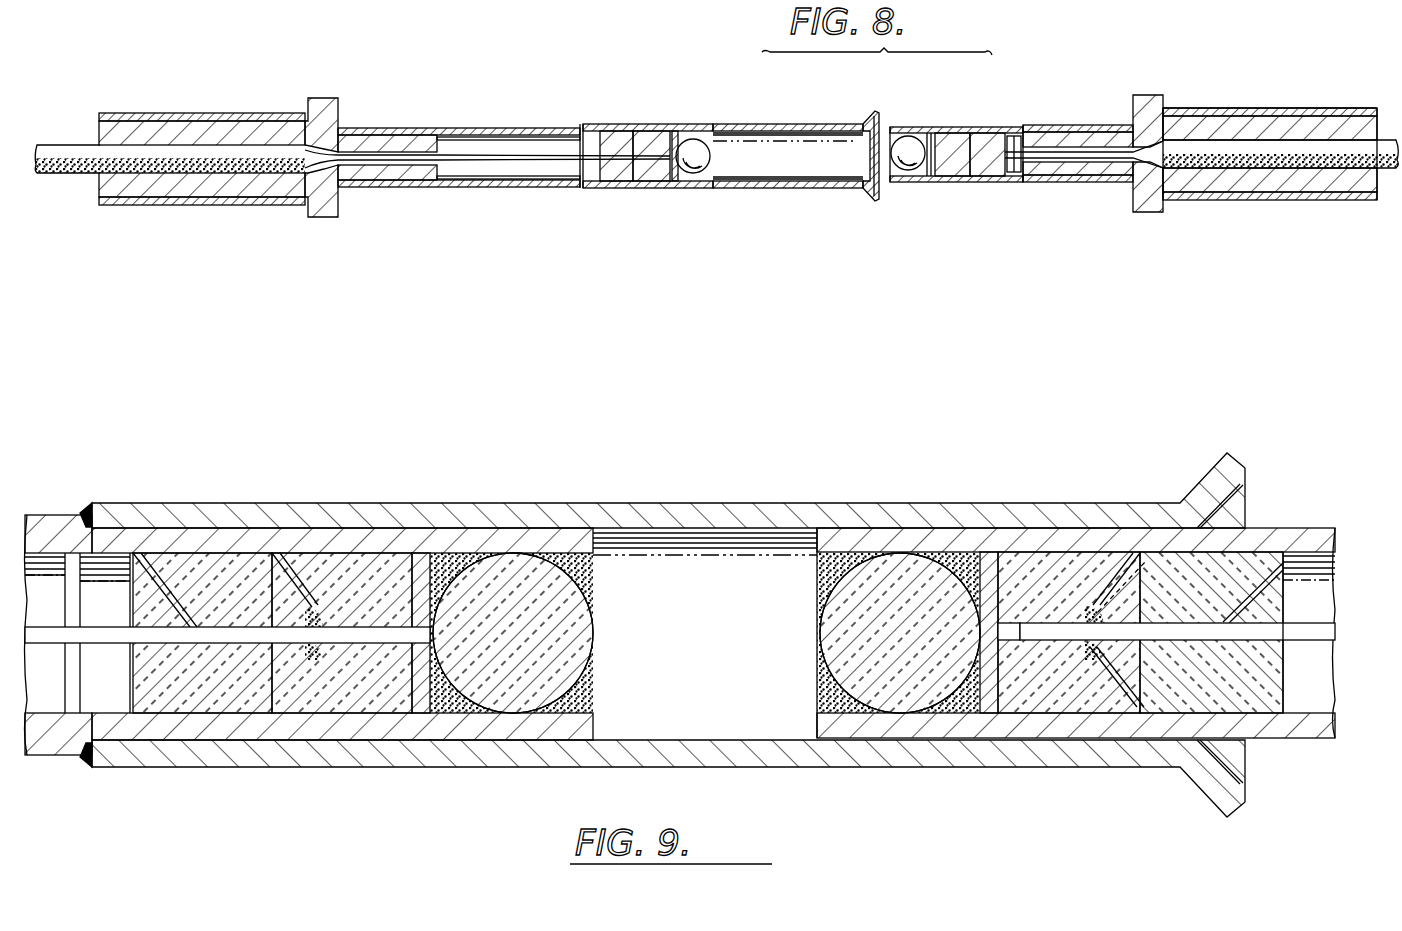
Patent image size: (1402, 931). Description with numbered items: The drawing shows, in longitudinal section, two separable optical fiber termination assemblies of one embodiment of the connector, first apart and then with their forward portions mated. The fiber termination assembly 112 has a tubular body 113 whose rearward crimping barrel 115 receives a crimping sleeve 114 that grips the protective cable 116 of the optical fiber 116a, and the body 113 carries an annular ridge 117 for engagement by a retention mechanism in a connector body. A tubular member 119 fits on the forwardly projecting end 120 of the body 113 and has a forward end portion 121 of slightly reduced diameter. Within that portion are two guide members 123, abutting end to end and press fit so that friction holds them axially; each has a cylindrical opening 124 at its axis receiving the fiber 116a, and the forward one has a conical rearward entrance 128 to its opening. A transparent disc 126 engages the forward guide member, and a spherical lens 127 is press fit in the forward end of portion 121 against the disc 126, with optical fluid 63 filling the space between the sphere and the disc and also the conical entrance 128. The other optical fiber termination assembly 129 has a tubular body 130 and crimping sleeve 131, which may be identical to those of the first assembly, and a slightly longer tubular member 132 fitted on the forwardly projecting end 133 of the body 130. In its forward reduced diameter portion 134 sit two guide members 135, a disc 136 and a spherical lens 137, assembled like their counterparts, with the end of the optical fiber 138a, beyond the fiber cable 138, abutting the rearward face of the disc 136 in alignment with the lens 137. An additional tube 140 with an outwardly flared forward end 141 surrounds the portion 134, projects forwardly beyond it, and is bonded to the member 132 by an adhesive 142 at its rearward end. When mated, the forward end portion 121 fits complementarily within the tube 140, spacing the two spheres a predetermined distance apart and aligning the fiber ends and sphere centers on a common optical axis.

In FIG. 9, the optical fluid 63 is at (965, 560).
In FIG. 8, the fiber termination assembly 112 is at (1228, 98).
In FIG. 8, the tubular body 113 is at (1195, 205).
In FIG. 8, the crimping sleeve 114 is at (1230, 186).
In FIG. 8, the crimping barrel 115 is at (1285, 200).
In FIG. 8, the protective cable 116 is at (1395, 140).
In FIG. 8, the optical fiber 116a is at (1115, 176).
In FIG. 9, the optical fiber 116a is at (1315, 622).
In FIG. 8, the annular ridge 117 is at (1148, 95).
In FIG. 8, the tubular member 119 is at (1035, 183).
In FIG. 9, the tubular member 119 is at (1272, 740).
In FIG. 8, the forwardly projecting end 120 is at (1100, 104).
In FIG. 8, the forward end portion 121 is at (925, 185).
In FIG. 9, the forward end portion 121 is at (820, 720).
In FIG. 8, the guide members 123 is at (977, 131).
In FIG. 9, the guide members 123 is at (1148, 712).
In FIG. 9, the cylindrical openings 124 is at (1020, 630).
In FIG. 8, the transparent disc 126 is at (940, 185).
In FIG. 9, the transparent disc 126 is at (990, 553).
In FIG. 8, the spherical lens 127 is at (912, 140).
In FIG. 9, the spherical lens 127 is at (822, 650).
In FIG. 9, the conical rearward entrance 128 is at (1135, 586).
In FIG. 8, the optical fiber termination assembly 129 is at (311, 240).
In FIG. 8, the tubular body 130 is at (262, 208).
In FIG. 8, the crimping sleeve 131 is at (256, 95).
In FIG. 8, the tubular member 132 is at (540, 190).
In FIG. 9, the tubular member 132 is at (52, 512).
In FIG. 8, the forwardly projecting end 133 is at (410, 104).
In FIG. 8, the forward reduced diameter portion 134 is at (648, 194).
In FIG. 9, the forward reduced diameter portion 134 is at (585, 530).
In FIG. 8, the guide members 135 is at (648, 131).
In FIG. 9, the guide members 135 is at (218, 555).
In FIG. 8, the disc 136 is at (678, 184).
In FIG. 9, the disc 136 is at (420, 555).
In FIG. 8, the spherical lens 137 is at (705, 140).
In FIG. 9, the spherical lens 137 is at (593, 635).
In FIG. 8, the fiber cable 138 is at (77, 116).
In FIG. 8, the optical fiber 138a is at (525, 154).
In FIG. 9, the optical fiber 138a is at (383, 594).
In FIG. 8, the tube 140 is at (780, 190).
In FIG. 9, the tube 140 is at (670, 503).
In FIG. 8, the outwardly flared forward end 141 is at (868, 116).
In FIG. 9, the outwardly flared forward end 141 is at (1222, 460).
In FIG. 8, the adhesive 142 is at (578, 190).
In FIG. 9, the adhesive 142 is at (92, 512).